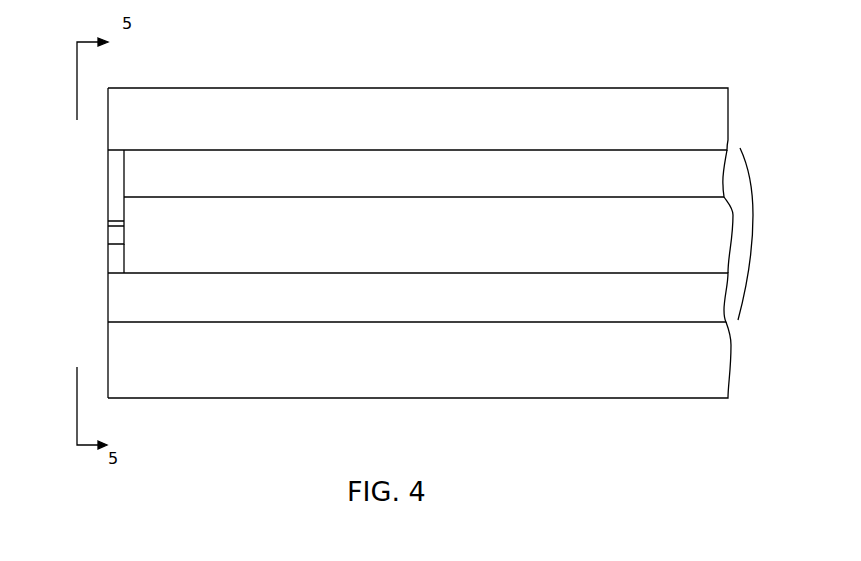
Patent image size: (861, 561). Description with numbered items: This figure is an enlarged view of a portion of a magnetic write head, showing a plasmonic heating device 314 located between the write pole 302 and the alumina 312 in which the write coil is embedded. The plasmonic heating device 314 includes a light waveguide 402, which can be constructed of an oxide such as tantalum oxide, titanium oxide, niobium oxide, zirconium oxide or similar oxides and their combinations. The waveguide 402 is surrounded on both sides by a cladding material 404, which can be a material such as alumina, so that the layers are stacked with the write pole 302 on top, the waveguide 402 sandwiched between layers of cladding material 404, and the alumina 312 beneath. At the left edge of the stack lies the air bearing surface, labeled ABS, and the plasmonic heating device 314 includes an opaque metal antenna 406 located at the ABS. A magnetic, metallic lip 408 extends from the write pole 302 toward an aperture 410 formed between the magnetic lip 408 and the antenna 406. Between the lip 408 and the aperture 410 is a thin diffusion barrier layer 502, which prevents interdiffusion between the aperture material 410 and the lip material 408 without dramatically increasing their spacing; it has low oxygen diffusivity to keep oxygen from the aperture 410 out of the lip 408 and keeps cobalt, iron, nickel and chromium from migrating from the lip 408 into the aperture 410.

The write pole 302 is at (418, 119).
The cladding material 404 is at (418, 236).
The light waveguide 402 is at (561, 235).
The alumina 312 is at (419, 360).
The magnetic lip 408 is at (118, 196).
The diffusion barrier layer 502 is at (108, 223).
The aperture 410 is at (108, 240).
The antenna 406 is at (108, 268).
The plasmonic heating device 314 is at (744, 163).
The air bearing surface ABS is at (108, 143).